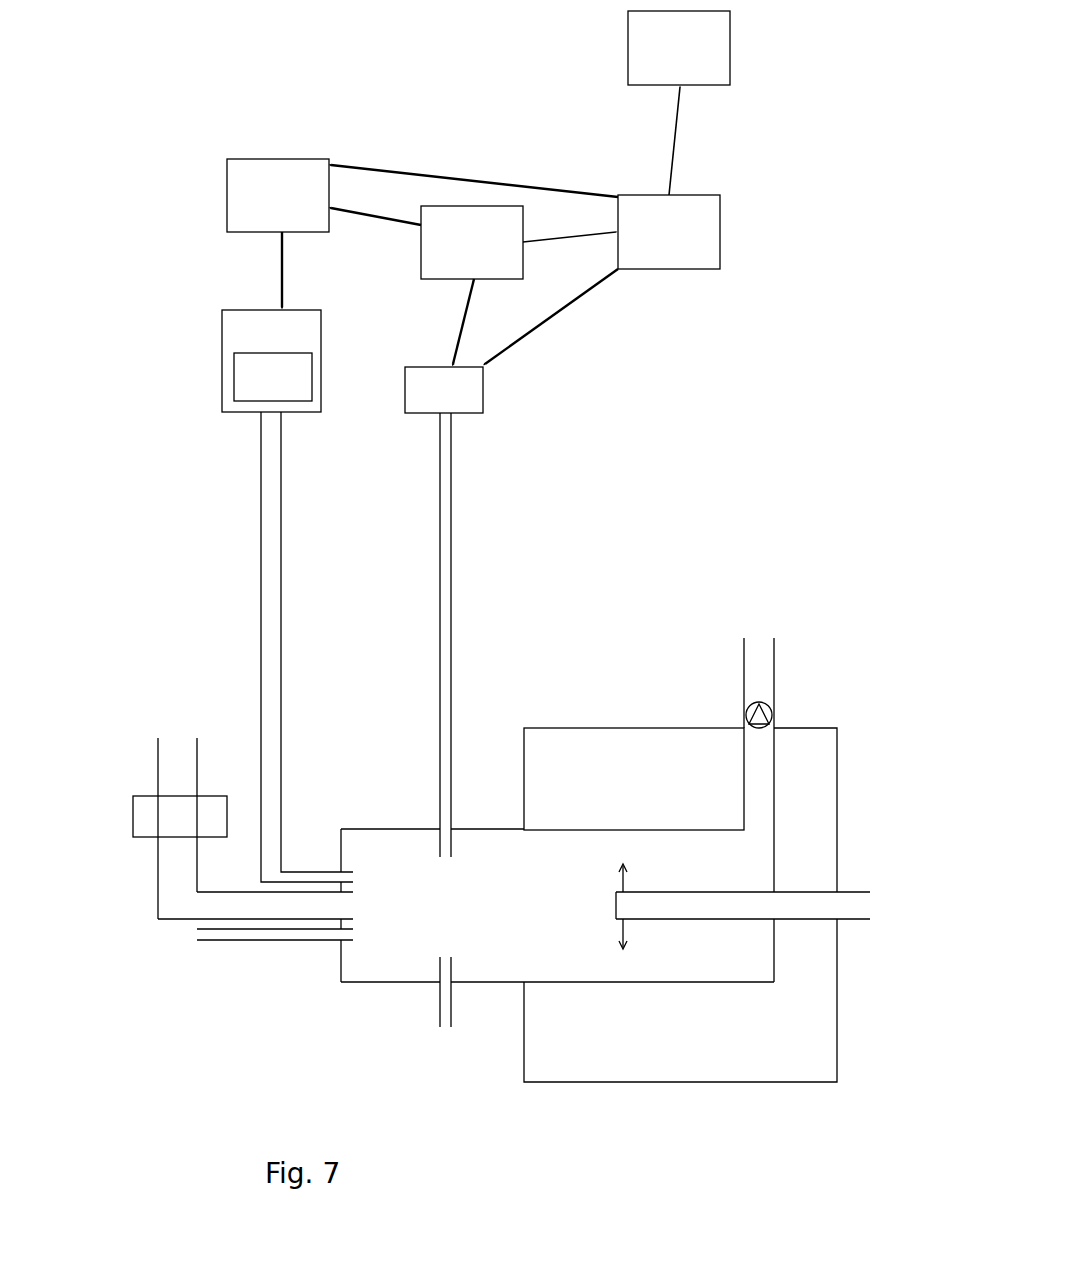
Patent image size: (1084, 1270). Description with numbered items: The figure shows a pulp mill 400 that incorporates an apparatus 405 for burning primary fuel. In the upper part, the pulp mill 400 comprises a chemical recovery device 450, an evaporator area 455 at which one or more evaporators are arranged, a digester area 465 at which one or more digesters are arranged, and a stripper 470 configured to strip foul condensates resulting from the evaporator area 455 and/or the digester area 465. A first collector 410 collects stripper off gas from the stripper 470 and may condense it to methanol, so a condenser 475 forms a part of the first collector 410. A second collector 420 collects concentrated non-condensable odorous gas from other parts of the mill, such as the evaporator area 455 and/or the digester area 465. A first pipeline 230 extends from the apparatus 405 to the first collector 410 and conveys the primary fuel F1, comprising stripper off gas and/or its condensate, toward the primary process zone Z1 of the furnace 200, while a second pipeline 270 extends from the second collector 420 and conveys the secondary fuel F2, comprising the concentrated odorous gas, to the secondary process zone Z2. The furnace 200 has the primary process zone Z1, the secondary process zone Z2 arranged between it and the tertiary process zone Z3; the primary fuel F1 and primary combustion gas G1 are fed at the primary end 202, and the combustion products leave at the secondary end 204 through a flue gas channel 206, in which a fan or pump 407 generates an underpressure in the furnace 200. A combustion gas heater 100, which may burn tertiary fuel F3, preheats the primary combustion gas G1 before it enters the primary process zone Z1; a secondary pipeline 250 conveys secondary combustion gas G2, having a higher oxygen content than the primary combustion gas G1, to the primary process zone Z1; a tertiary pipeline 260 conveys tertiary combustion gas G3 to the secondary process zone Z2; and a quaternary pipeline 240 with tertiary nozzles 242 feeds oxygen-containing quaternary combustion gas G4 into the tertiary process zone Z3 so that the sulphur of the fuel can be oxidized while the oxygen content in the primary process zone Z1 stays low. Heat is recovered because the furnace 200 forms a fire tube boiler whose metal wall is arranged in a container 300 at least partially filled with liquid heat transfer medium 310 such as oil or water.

The pulp mill 400 is at (449, 106).
The chemical recovery device 450 is at (653, 61).
The stripper 470 is at (252, 210).
The digester area 465 is at (446, 257).
The evaporator area 455 is at (643, 247).
The first collector 410 is at (222, 330).
The condenser 475 is at (248, 392).
The second collector 420 is at (419, 405).
The apparatus 405 is at (571, 645).
The first pipeline 230 is at (283, 652).
The second pipeline 270 is at (453, 648).
The furnace 200 is at (580, 910).
The primary end 202 is at (349, 855).
The secondary end 204 is at (768, 948).
The flue gas channel 206 is at (777, 775).
The combustion gas heater 100 is at (133, 796).
The secondary pipeline 250 is at (272, 940).
The tertiary pipeline 260 is at (451, 985).
The liquid heat transfer medium 310 is at (714, 794).
The container 300 is at (636, 728).
The fan or pump 407 is at (768, 715).
The quaternary pipeline 240 is at (858, 892).
The tertiary nozzles 242 is at (620, 889).
The primary fuel F1 is at (271, 508).
The secondary fuel F2 is at (446, 490).
The tertiary fuel F3 is at (158, 820).
The primary combustion gas G1 is at (238, 908).
The secondary combustion gas G2 is at (200, 929).
The tertiary combustion gas G3 is at (446, 1015).
The quaternary combustion gas G4 is at (864, 907).
The primary process zone Z1 is at (392, 916).
The secondary process zone Z2 is at (463, 924).
The tertiary process zone Z3 is at (695, 964).